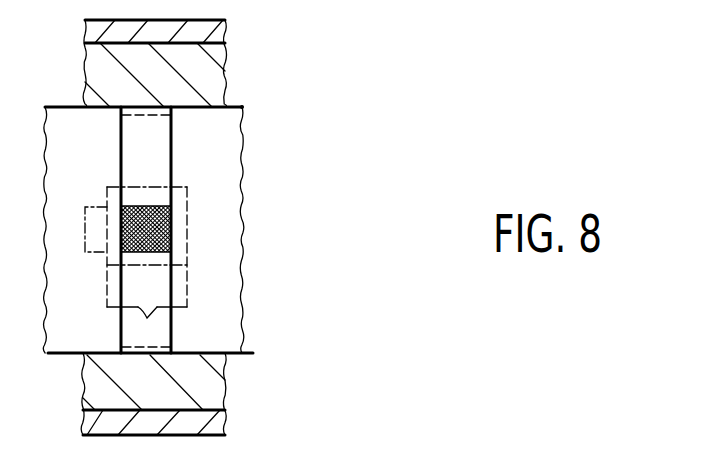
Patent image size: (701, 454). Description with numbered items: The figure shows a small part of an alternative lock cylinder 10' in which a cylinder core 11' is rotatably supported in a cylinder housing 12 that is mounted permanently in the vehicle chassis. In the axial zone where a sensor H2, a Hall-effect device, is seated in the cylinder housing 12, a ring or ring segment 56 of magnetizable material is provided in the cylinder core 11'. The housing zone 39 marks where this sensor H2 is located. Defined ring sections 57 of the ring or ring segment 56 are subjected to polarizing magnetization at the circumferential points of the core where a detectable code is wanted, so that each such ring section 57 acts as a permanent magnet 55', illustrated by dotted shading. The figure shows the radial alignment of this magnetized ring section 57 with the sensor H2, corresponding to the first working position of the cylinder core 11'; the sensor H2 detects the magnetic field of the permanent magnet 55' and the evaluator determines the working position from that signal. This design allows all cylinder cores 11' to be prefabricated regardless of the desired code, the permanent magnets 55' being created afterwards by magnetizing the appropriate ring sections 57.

The lock cylinder 10' is at (223, 63).
The cylinder housing 12 is at (202, 72).
The cylinder core 11' is at (176, 212).
The ring or ring segment 56 is at (150, 162).
The permanent magnet 55' is at (222, 219).
The ring section 57 is at (85, 207).
The sensor H2 is at (187, 252).
The housing zone 39 is at (147, 318).